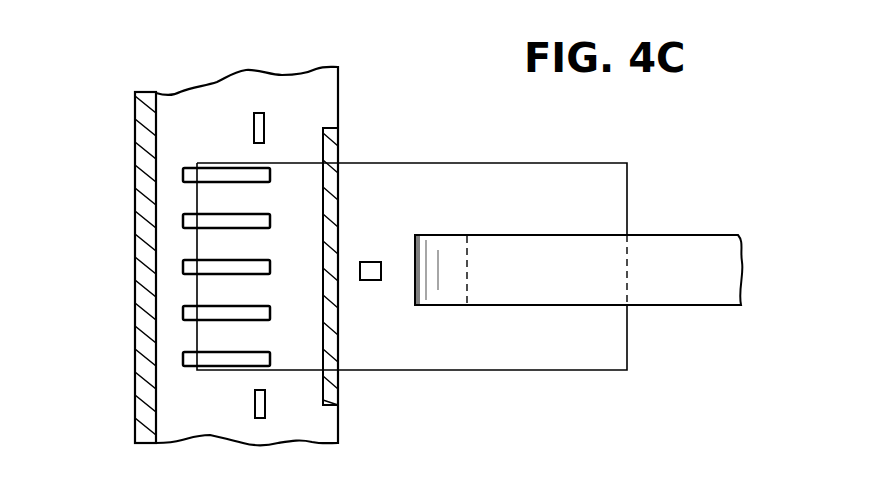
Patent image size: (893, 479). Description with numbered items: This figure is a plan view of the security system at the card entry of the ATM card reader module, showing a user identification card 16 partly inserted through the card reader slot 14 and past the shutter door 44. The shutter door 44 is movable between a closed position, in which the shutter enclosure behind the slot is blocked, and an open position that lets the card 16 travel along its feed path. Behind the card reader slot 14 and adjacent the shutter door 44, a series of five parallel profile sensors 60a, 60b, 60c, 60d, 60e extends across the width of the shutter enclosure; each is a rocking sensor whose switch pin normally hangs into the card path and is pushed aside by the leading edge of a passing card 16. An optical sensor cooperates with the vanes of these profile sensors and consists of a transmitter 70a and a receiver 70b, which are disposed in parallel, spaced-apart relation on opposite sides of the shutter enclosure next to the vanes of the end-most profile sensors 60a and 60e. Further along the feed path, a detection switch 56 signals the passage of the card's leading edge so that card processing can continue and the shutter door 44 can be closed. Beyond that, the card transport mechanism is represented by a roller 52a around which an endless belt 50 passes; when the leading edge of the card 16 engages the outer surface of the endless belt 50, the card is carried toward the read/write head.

The card reader slot 14 is at (134, 285).
The user identification card 16 is at (525, 172).
The shutter door 44 is at (330, 378).
The endless belt 50 is at (682, 306).
The roller 52a is at (468, 277).
The detection switch 56 is at (364, 282).
The profile sensor 60a is at (183, 167).
The profile sensor 60b is at (240, 213).
The profile sensor 60c is at (240, 259).
The profile sensor 60d is at (240, 305).
The profile sensor 60e is at (240, 351).
The transmitter 70a is at (255, 407).
The receiver 70b is at (260, 113).